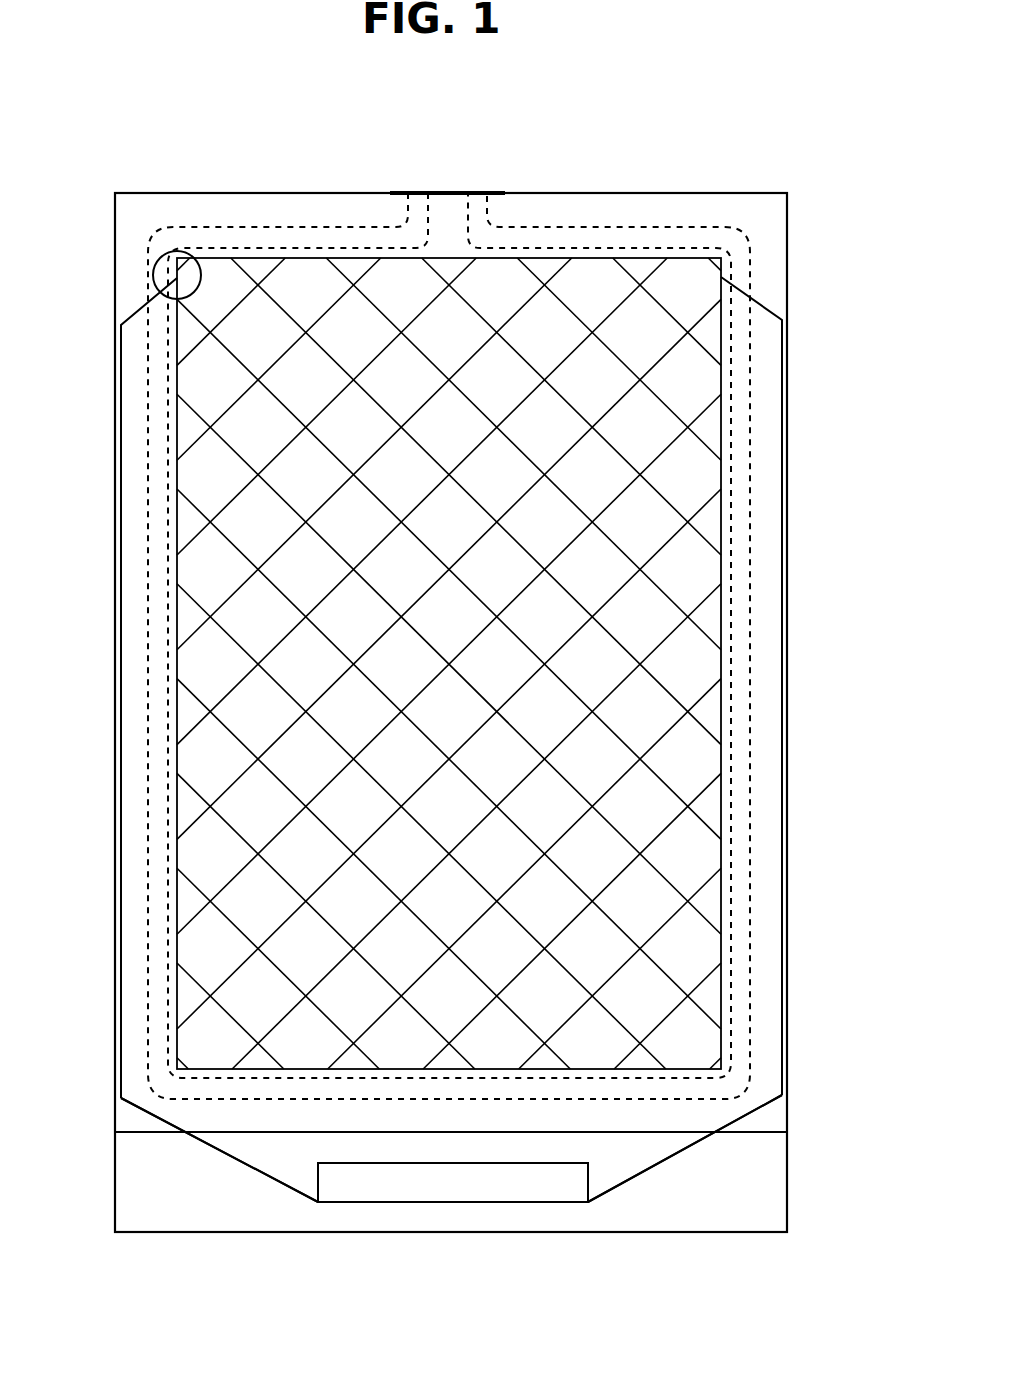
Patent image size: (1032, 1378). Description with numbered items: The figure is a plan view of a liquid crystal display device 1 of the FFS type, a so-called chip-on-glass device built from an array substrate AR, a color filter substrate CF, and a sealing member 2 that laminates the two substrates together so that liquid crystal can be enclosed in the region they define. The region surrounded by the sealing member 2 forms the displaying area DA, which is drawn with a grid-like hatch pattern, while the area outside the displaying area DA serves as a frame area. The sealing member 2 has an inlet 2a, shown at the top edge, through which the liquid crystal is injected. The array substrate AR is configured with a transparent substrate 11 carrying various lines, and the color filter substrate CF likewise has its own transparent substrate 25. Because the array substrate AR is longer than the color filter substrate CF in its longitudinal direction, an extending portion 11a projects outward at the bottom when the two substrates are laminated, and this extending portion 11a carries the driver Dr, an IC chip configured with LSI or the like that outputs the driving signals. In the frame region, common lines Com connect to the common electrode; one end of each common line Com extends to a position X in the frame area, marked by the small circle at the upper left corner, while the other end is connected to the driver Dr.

The liquid crystal display device 1 is at (277, 107).
The sealing member 2 is at (740, 481).
The inlet 2a is at (460, 192).
The position X is at (156, 262).
The displaying area DA is at (255, 612).
The color filter substrate CF is at (776, 1035).
The transparent substrate 25 is at (776, 1113).
The transparent substrate 11 is at (772, 1172).
The extending portion 11a is at (695, 1222).
The common lines Com is at (270, 1173).
The driver Dr is at (372, 1185).
The array substrate AR is at (210, 1195).